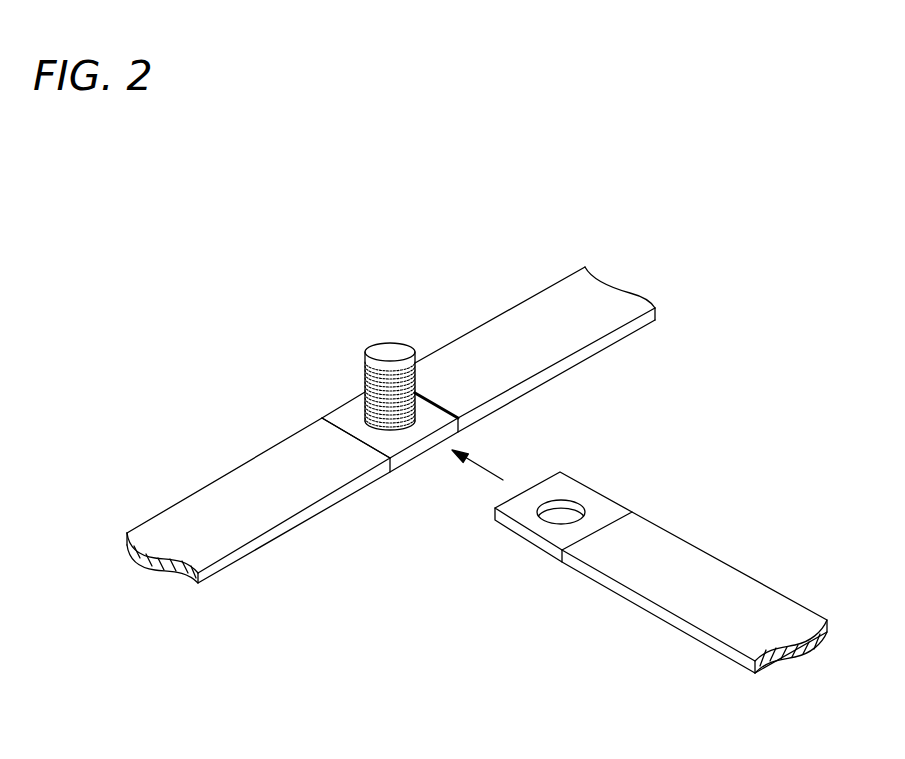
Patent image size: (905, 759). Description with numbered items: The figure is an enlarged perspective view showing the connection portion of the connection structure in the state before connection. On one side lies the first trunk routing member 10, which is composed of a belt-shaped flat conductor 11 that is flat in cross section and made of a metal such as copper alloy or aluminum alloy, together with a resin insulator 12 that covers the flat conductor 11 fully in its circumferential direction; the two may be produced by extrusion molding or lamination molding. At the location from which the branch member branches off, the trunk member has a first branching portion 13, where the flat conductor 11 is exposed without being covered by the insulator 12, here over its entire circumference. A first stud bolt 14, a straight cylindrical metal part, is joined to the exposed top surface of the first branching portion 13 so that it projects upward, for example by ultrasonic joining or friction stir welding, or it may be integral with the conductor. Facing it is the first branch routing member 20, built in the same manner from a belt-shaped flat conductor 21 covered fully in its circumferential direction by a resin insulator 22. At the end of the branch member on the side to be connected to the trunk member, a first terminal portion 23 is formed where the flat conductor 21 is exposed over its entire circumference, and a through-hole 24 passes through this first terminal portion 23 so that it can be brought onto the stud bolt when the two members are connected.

The first trunk routing member 10 is at (480, 308).
The flat conductor 11 is at (338, 422).
The insulator 12 is at (247, 488).
The first branching portion 13 is at (357, 412).
The first stud bolt 14 is at (392, 350).
The first branch routing member 20 is at (629, 549).
The flat conductor 21 is at (532, 509).
The insulator 22 is at (771, 589).
The first terminal portion 23 is at (522, 512).
The through-hole 24 is at (548, 522).